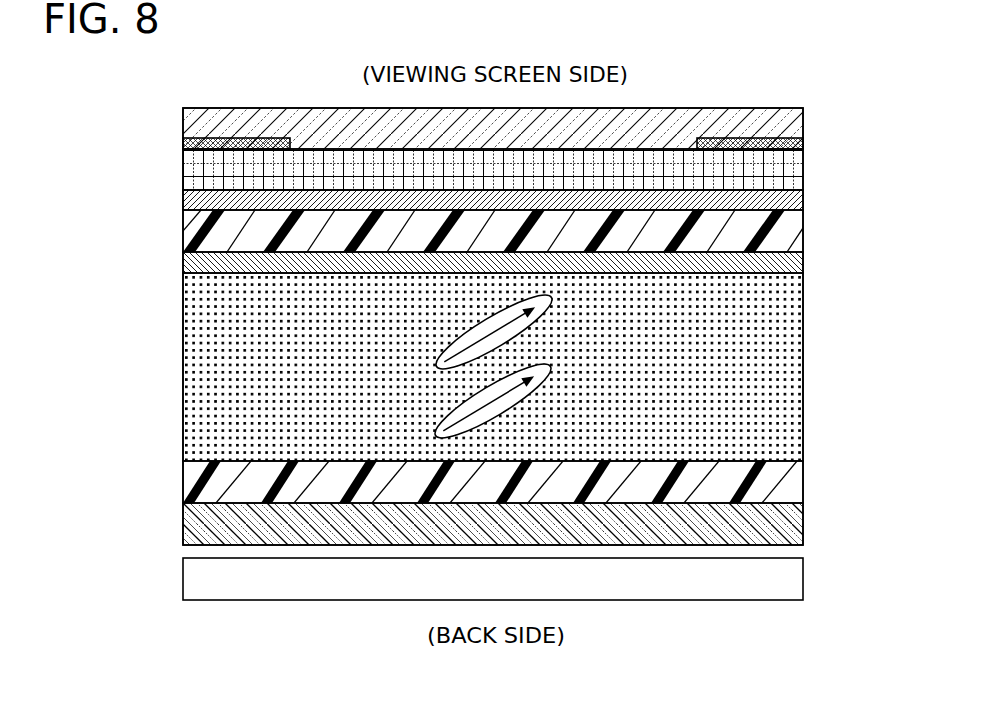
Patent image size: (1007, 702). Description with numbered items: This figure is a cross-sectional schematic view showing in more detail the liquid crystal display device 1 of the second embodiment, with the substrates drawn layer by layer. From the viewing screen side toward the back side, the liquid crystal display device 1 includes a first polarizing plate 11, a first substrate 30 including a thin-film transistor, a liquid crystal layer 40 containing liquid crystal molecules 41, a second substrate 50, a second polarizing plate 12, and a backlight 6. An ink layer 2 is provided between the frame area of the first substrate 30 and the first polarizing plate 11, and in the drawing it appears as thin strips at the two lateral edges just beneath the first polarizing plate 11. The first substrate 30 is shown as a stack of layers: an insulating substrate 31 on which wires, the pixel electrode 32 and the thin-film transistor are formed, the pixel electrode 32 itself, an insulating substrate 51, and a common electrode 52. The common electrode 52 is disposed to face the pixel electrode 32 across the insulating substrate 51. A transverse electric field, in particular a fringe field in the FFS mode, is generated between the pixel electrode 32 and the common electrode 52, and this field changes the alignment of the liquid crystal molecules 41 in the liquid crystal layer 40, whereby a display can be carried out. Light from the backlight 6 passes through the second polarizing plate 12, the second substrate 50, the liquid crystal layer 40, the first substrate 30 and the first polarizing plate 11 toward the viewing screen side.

The liquid crystal display device 1 is at (820, 86).
The ink layer 2 is at (237, 138).
The backlight 6 is at (780, 583).
The first polarizing plate 11 is at (782, 129).
The second polarizing plate 12 is at (782, 527).
The first substrate 30 is at (539, 214).
The insulating substrate 31 is at (782, 168).
The pixel electrode 32 is at (783, 199).
The liquid crystal layer 40 is at (781, 324).
The liquid crystal molecules 41 is at (510, 400).
The second substrate 50 is at (782, 487).
The insulating substrate 51 is at (782, 229).
The common electrode 52 is at (531, 263).